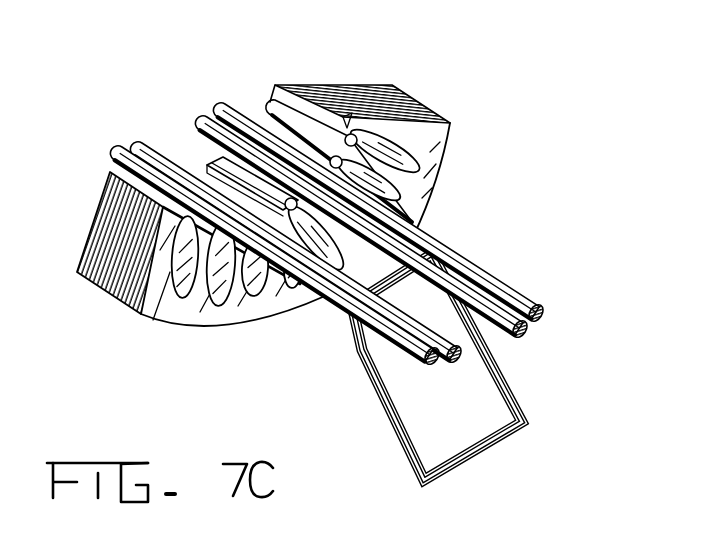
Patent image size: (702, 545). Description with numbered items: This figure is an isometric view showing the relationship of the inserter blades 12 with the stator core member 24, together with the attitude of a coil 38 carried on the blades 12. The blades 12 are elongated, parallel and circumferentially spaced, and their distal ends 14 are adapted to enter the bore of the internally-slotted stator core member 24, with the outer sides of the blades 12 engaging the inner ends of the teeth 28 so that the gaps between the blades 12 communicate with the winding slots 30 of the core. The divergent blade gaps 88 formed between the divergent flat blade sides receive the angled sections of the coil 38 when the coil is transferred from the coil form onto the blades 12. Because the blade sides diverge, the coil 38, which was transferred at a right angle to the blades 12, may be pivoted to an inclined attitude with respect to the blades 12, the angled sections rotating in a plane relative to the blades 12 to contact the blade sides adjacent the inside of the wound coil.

The blades 12 is at (428, 247).
The distal ends 14 is at (313, 215).
The stator core member 24 is at (132, 330).
The teeth 28 is at (278, 97).
The winding slots 30 is at (396, 190).
The coils 38 is at (386, 404).
The divergent blade gaps 88 is at (533, 327).